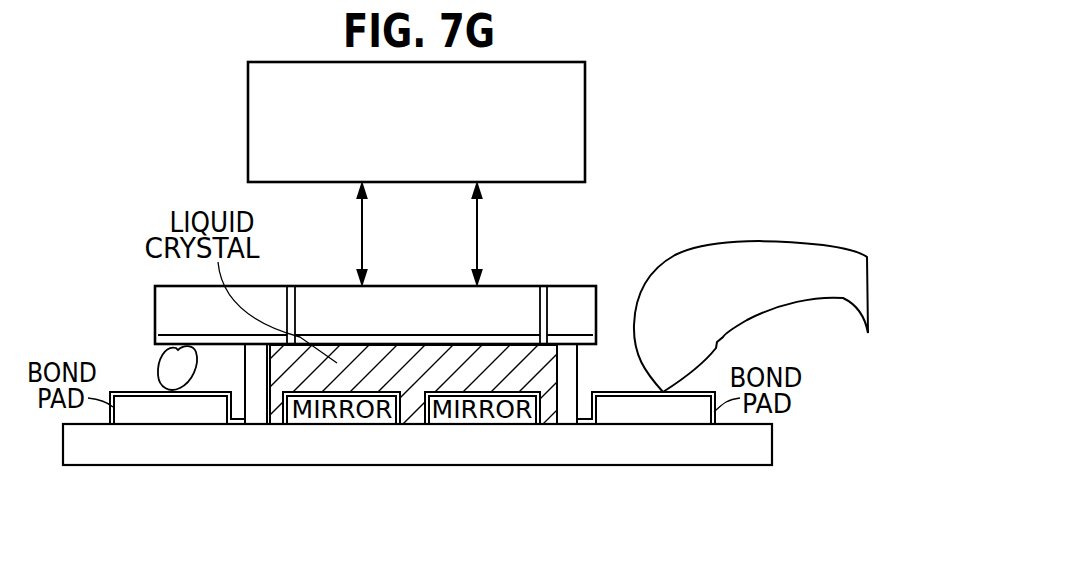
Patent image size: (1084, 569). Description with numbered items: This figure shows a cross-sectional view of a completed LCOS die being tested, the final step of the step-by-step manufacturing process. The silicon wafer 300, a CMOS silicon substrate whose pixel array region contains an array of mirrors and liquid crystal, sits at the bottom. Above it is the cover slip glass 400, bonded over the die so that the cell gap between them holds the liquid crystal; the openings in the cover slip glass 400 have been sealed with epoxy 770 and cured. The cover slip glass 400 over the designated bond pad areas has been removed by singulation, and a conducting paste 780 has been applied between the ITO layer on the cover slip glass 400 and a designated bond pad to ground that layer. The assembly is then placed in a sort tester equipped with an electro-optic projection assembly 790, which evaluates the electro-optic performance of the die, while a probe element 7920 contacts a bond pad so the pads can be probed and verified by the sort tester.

The electro-optic projection assembly 790 is at (586, 133).
The epoxy 770 is at (294, 282).
The cover slip glass 400 is at (596, 298).
The conducting paste 780 is at (167, 378).
The silicon wafer 300 is at (773, 445).
The bonding tool 7920 is at (831, 235).